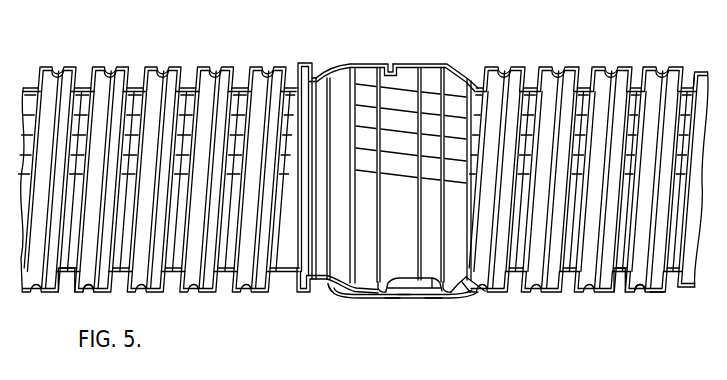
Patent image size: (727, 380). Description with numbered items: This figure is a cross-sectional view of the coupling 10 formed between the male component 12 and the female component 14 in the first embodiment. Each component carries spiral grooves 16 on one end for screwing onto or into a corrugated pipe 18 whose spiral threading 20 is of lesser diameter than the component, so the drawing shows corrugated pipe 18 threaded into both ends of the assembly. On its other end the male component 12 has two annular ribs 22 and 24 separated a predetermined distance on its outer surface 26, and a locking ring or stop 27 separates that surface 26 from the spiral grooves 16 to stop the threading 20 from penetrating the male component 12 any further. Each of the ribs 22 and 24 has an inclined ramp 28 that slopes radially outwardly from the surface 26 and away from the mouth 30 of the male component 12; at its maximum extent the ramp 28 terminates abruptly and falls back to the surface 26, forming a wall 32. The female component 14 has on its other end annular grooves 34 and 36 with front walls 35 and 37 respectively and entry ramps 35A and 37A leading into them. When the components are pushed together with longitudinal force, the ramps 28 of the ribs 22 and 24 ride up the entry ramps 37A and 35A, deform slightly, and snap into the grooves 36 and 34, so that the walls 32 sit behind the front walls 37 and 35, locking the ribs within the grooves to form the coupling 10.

The coupling 10 is at (345, 303).
The male component 12 is at (408, 63).
The female component 14 is at (350, 64).
The spiral grooves 16 is at (200, 296).
The corrugated pipe 18 is at (98, 292).
The spiral threading 20 is at (84, 295).
The annular rib 22 is at (366, 296).
The annular rib 24 is at (432, 276).
The outer surface 26 is at (402, 280).
The locking ring or stop 27 is at (288, 298).
The inclined ramp 28 is at (352, 282).
The mouth 30 is at (368, 188).
The wall 32 is at (378, 282).
The annular groove 34 is at (434, 299).
The front wall 35 is at (455, 293).
The entry ramp 35A is at (458, 300).
The annular groove 36 is at (329, 292).
The front wall 37 is at (392, 299).
The entry ramp 37A is at (403, 296).